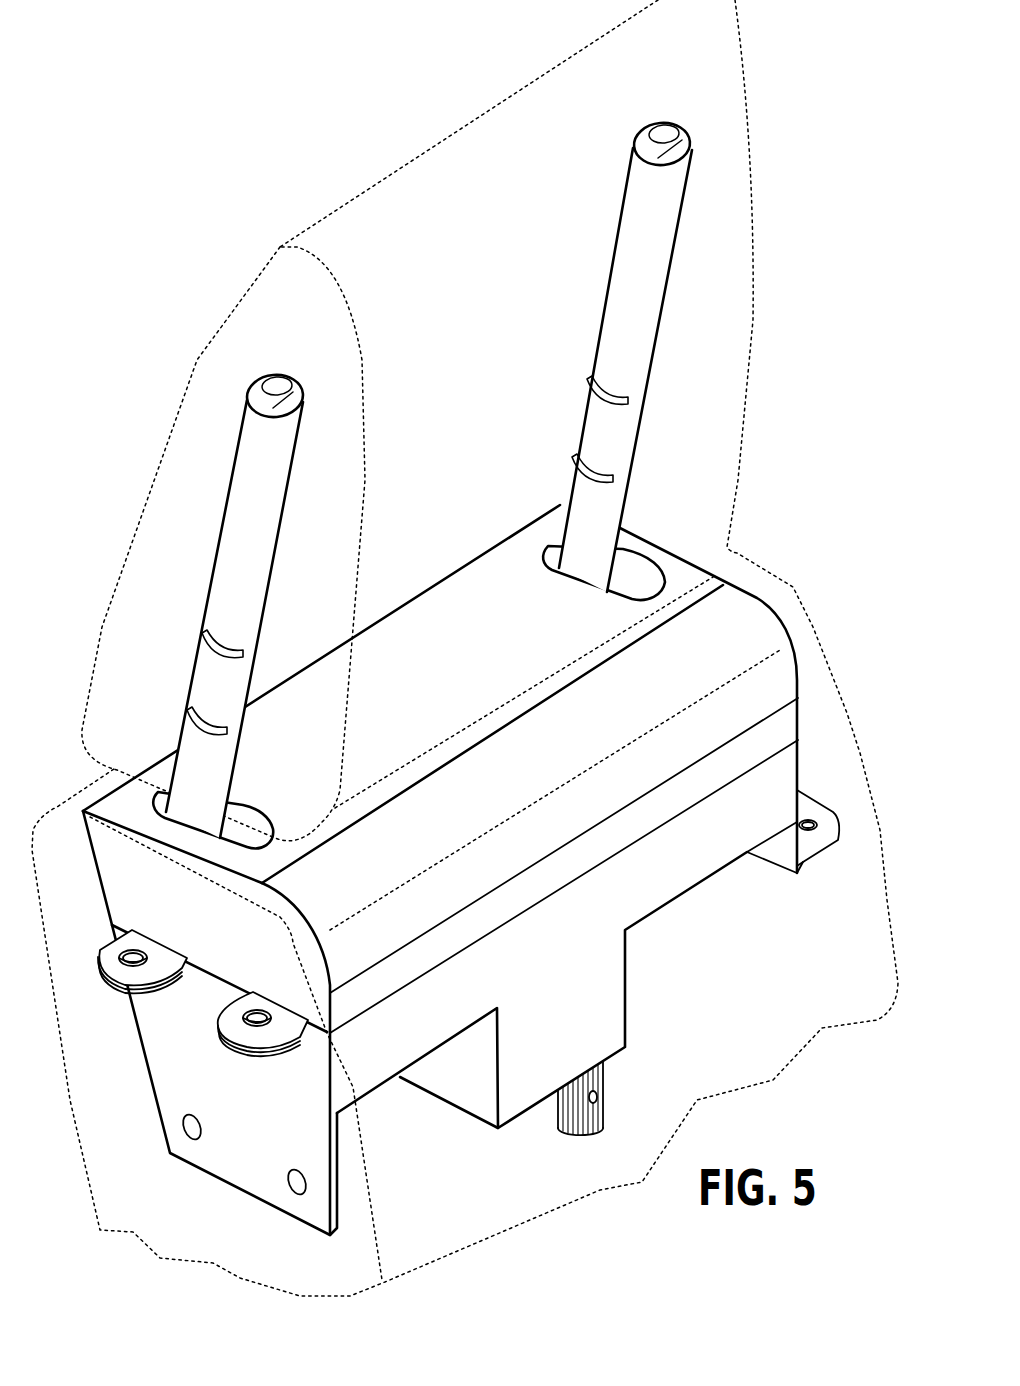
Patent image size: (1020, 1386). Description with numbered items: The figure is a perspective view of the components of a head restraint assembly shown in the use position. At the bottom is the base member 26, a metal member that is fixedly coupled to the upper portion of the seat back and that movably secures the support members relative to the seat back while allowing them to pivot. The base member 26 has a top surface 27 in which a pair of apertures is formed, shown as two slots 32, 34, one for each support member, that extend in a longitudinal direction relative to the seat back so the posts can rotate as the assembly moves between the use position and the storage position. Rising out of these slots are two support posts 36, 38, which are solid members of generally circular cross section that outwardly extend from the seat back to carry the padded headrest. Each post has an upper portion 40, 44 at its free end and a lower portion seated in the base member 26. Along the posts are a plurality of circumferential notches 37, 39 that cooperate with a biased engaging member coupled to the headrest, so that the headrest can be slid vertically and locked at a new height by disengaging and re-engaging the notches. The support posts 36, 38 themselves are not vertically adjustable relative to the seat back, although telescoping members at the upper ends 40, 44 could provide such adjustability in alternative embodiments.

The base member 26 is at (235, 1168).
The top surface 27 is at (437, 678).
The slot 32 is at (159, 795).
The slot 34 is at (546, 548).
The support post 36 is at (213, 564).
The circumferential notches 37 is at (200, 730).
The support post 38 is at (638, 319).
The circumferential notches 39 is at (587, 470).
The upper portion 40 is at (284, 385).
The upper portion 44 is at (683, 130).